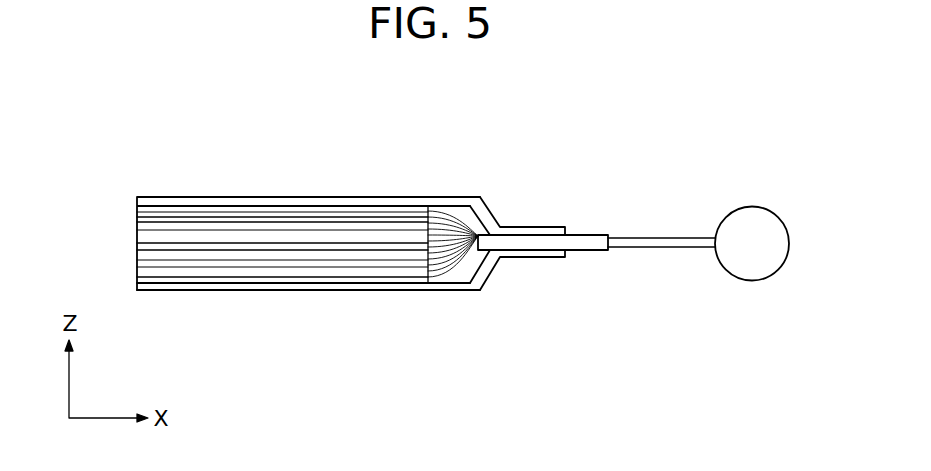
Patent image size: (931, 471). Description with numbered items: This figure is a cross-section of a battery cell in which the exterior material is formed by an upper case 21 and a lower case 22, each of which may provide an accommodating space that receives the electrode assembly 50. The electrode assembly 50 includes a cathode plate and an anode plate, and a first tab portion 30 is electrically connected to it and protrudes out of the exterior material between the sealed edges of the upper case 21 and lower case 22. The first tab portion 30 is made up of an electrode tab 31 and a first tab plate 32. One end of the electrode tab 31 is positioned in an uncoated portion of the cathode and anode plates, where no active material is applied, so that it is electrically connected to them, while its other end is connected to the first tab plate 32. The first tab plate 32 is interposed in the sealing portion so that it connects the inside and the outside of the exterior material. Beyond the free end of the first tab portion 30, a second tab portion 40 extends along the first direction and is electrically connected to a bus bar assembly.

The upper case 21 is at (267, 197).
The lower case 22 is at (267, 290).
The electrode assembly 50 is at (368, 208).
The first tab portion 30 is at (565, 141).
The electrode tab 31 is at (462, 202).
The first tab plate 32 is at (538, 240).
The second tab portion 40 is at (768, 207).